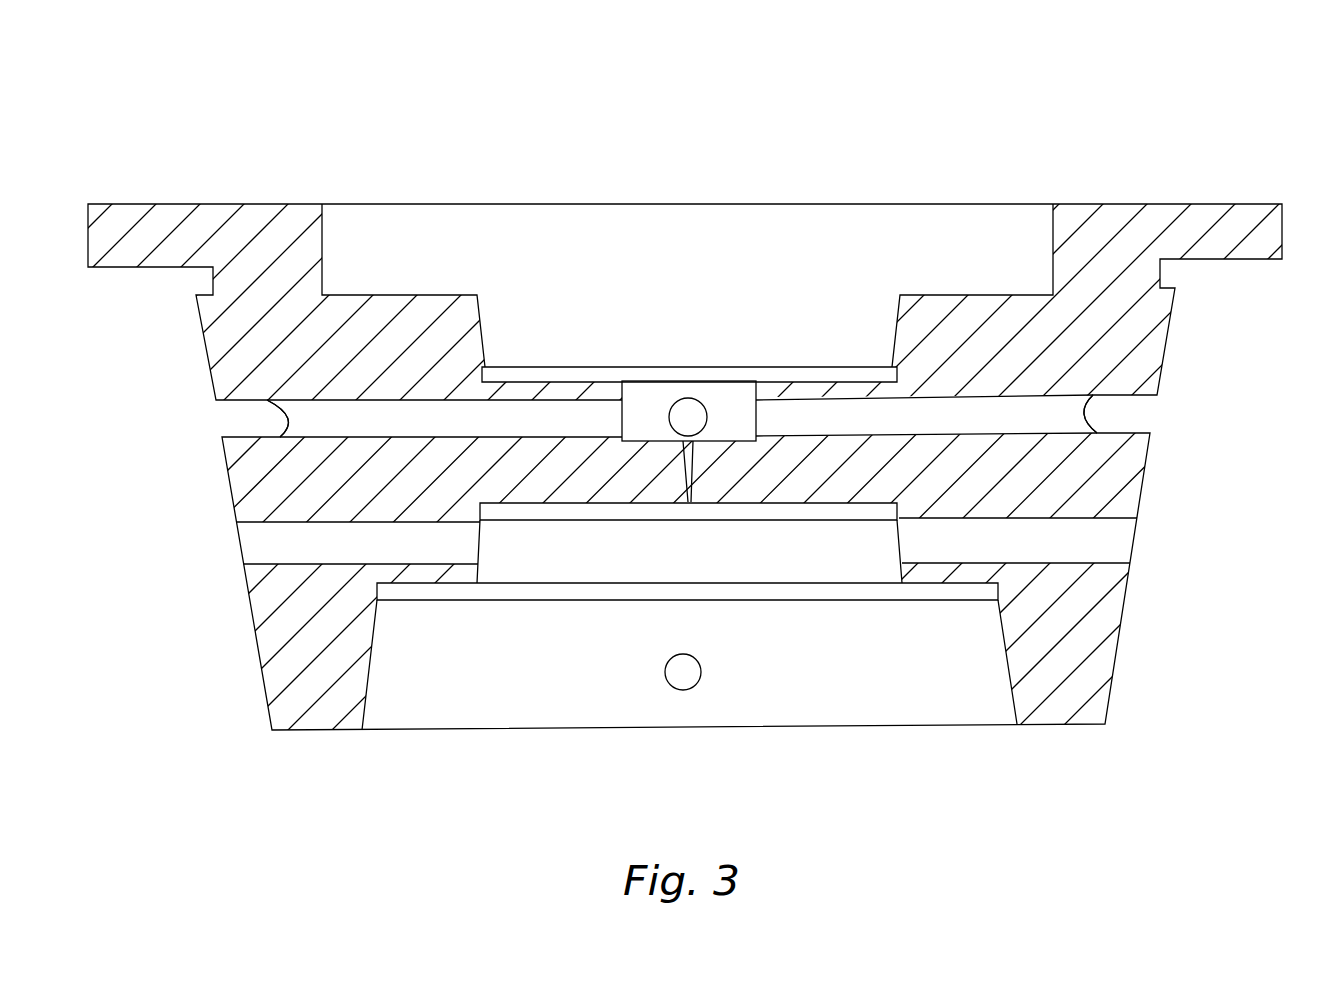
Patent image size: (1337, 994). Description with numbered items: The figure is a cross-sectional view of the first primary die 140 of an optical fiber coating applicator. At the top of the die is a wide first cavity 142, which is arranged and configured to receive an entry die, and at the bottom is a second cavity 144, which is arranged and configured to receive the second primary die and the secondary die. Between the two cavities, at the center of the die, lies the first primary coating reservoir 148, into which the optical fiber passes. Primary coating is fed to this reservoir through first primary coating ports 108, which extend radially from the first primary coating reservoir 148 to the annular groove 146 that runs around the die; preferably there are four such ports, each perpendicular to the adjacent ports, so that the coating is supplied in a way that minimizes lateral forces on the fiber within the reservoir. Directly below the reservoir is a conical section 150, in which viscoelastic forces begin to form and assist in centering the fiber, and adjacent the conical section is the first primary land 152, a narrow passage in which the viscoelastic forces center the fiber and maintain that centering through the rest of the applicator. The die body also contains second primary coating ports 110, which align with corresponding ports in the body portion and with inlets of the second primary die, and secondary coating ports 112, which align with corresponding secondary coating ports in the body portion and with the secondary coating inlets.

The first primary die 140 is at (1096, 90).
The first cavity 142 is at (630, 216).
The second cavity 144 is at (566, 713).
The annular groove 146 is at (244, 417).
The first primary coating reservoir 148 is at (653, 405).
The first primary coating ports 108 is at (695, 420).
The second primary coating ports 110 is at (380, 553).
The conical section 150 is at (677, 477).
The first primary land 152 is at (695, 495).
The secondary coating ports 112 is at (690, 673).